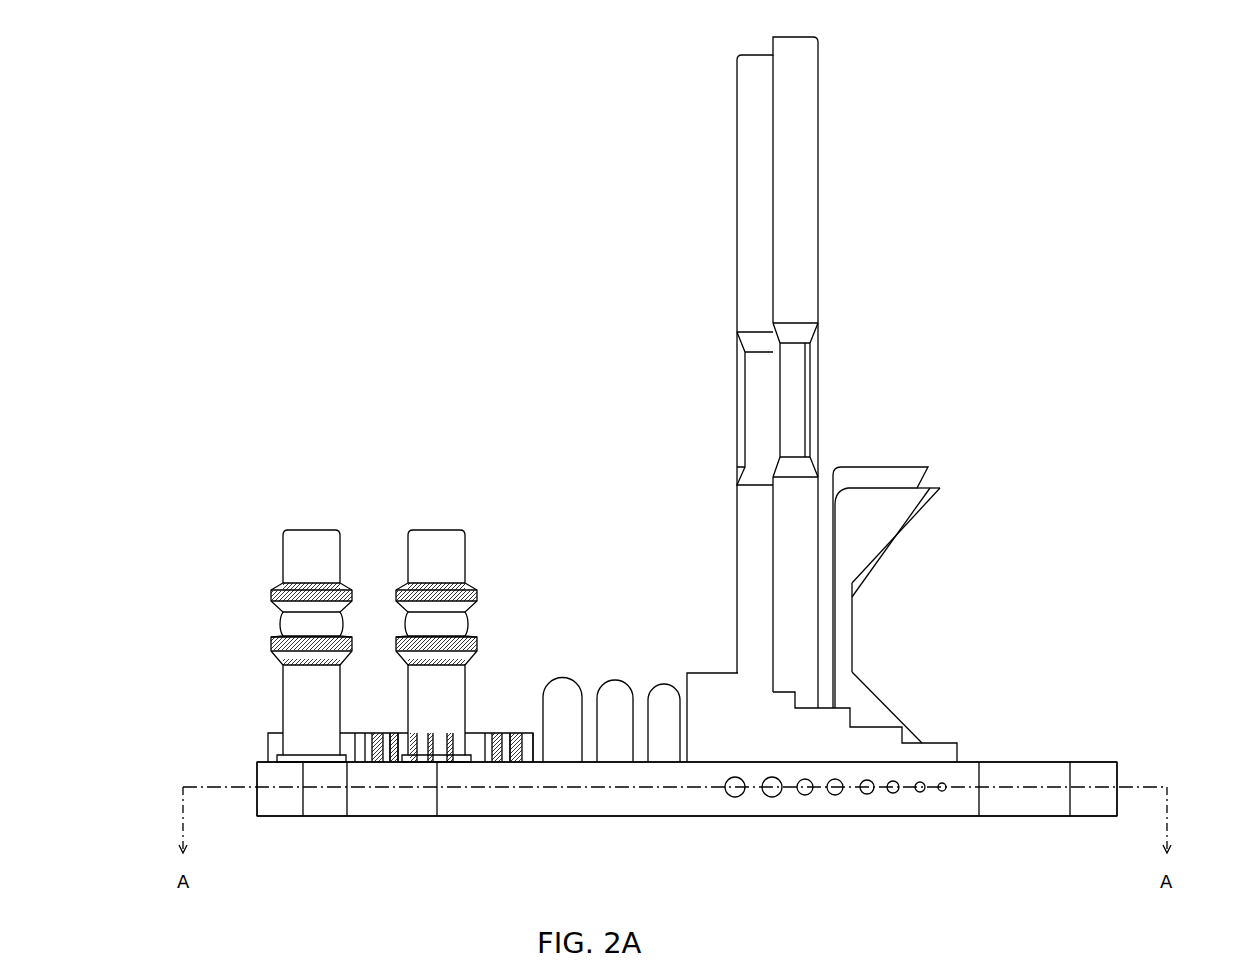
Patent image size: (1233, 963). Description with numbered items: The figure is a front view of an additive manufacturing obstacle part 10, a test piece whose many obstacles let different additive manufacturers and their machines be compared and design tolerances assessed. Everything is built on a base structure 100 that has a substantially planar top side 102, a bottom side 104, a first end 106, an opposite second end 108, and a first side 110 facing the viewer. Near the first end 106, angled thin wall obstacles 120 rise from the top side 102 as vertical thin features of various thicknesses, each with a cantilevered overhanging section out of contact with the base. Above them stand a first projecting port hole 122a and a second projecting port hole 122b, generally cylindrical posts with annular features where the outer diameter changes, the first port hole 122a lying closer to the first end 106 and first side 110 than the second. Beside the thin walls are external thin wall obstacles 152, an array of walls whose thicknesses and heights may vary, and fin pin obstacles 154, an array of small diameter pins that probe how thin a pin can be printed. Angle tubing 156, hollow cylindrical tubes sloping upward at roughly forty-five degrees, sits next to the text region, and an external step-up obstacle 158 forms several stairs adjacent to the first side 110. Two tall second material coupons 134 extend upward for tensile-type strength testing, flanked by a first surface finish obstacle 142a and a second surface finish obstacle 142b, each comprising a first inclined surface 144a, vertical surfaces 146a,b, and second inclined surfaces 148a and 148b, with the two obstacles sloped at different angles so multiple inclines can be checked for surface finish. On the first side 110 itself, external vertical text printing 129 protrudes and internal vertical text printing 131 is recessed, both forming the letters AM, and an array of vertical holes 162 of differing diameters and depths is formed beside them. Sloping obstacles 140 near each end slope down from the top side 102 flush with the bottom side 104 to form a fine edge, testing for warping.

The additive manufacturing obstacle part 10 is at (400, 363).
The base structure 100 is at (487, 807).
The top side 102 is at (1058, 762).
The bottom side 104 is at (755, 817).
The first end 106 is at (257, 775).
The second end 108 is at (1117, 777).
The first side 110 is at (457, 810).
The angled thin wall obstacles 120 is at (275, 738).
The first projecting port hole 122a is at (300, 572).
The second projecting port hole 122b is at (420, 542).
The external vertical text printing 129 is at (680, 792).
The internal vertical text printing 131 is at (590, 807).
The second material coupons 134 is at (788, 145).
The sloping obstacles 140 is at (367, 800).
The first surface finish obstacle 142a is at (900, 522).
The second surface finish obstacle 142b is at (860, 470).
The first inclined surface 144a is at (873, 690).
The vertical surfaces 146a,b is at (848, 616).
The second inclined surface 148a is at (933, 505).
The second inclined surface 148b is at (870, 570).
The external thin wall obstacles 152 is at (522, 733).
The fin pin obstacles 154 is at (398, 755).
The angle tubing 156 is at (653, 697).
The external step-up obstacle 158 is at (708, 687).
The array of vertical holes 162 is at (807, 793).